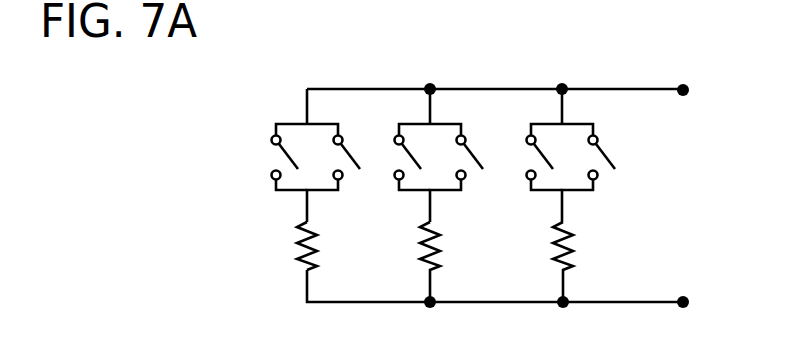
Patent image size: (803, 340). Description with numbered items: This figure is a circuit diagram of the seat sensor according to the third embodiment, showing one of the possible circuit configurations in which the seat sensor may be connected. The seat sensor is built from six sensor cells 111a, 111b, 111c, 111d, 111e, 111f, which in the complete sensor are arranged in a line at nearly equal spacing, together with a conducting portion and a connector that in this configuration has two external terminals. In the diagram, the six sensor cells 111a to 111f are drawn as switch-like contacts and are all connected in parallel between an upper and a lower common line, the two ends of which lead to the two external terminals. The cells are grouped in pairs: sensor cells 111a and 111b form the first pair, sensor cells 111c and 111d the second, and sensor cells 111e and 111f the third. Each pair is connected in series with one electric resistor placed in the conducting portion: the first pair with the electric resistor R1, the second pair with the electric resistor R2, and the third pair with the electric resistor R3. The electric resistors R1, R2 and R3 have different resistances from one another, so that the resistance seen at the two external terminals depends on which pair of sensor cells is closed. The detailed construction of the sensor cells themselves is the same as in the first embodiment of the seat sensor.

The sensor cell 111a is at (272, 160).
The sensor cell 111b is at (321, 162).
The sensor cell 111c is at (393, 160).
The sensor cell 111d is at (448, 160).
The sensor cell 111e is at (525, 158).
The sensor cell 111f is at (585, 160).
The electric resistor R1 is at (294, 250).
The electric resistor R2 is at (417, 250).
The electric resistor R3 is at (548, 251).